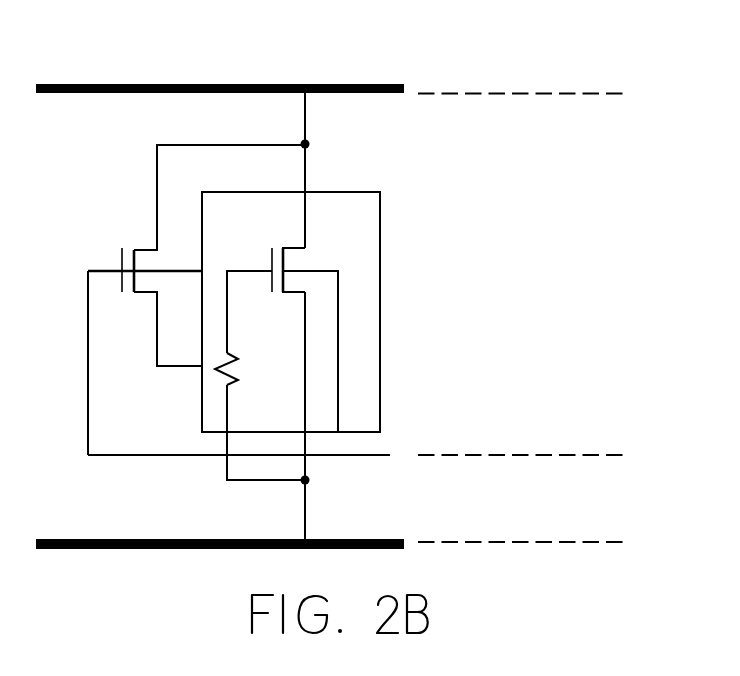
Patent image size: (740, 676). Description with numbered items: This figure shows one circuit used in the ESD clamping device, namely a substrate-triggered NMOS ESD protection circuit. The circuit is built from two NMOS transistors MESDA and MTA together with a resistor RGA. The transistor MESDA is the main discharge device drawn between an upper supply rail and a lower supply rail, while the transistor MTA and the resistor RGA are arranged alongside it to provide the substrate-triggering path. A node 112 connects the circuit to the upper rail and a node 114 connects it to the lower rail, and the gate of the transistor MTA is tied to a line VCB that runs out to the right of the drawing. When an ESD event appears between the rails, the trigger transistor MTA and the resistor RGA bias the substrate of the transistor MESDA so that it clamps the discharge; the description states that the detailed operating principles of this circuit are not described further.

The first node (VDD_ESD node) 112 is at (308, 144).
The second node (VSS_ESD node) 114 is at (307, 480).
The NMOS transistor MTA is at (143, 245).
The NMOS transistor MESDA is at (291, 312).
The resistor RGA is at (260, 416).
The control bias node VCB is at (355, 433).